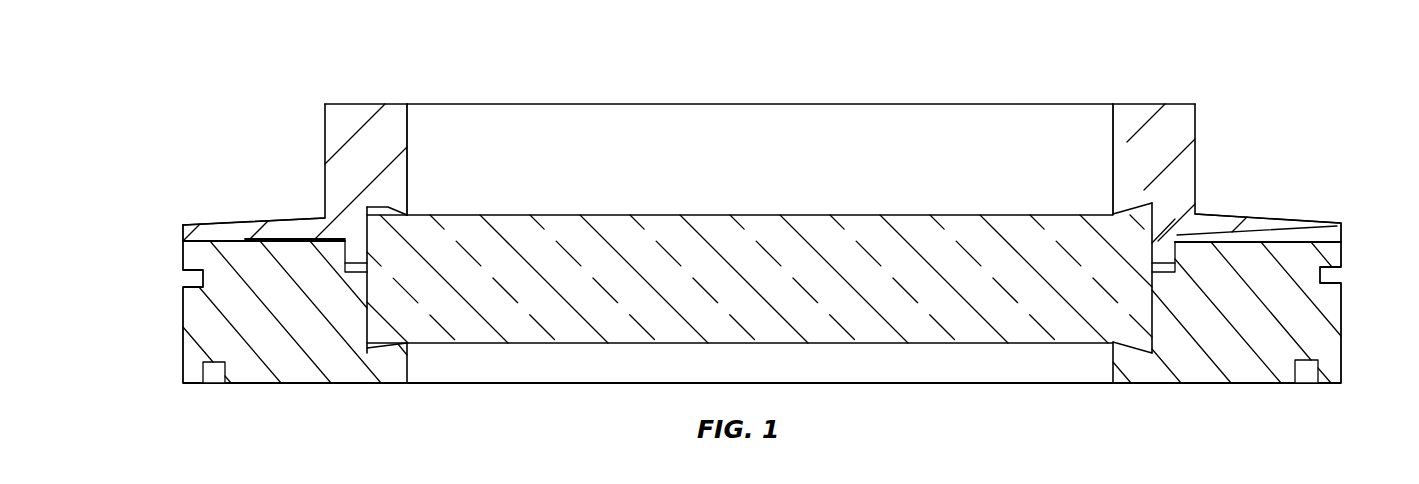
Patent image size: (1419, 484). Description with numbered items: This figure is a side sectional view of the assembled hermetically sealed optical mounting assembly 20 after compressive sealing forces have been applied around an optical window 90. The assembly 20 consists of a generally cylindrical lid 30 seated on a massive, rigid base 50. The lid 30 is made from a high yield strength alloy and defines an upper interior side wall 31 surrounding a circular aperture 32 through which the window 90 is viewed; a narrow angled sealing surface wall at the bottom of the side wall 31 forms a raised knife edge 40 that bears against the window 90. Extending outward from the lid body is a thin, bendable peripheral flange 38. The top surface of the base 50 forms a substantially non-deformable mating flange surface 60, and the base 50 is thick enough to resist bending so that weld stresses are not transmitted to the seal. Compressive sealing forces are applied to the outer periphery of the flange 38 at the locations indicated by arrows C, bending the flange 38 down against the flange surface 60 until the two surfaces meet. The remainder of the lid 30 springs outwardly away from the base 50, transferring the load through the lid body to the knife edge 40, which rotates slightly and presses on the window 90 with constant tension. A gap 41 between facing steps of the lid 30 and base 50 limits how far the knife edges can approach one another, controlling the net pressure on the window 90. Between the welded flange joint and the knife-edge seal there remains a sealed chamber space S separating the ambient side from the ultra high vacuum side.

The optical mounting assembly 20 is at (768, 97).
The lid 30 is at (333, 167).
The upper interior side wall 31 is at (400, 127).
The circular aperture 32 is at (770, 192).
The peripheral flange 38 is at (257, 225).
The knife edge 40 is at (413, 215).
The gap 41 is at (368, 270).
The base 50 is at (197, 323).
The mating flange surface 60 is at (183, 242).
The window 90 is at (970, 323).
The arrows C is at (183, 200).
The sealed chamber space S is at (335, 245).